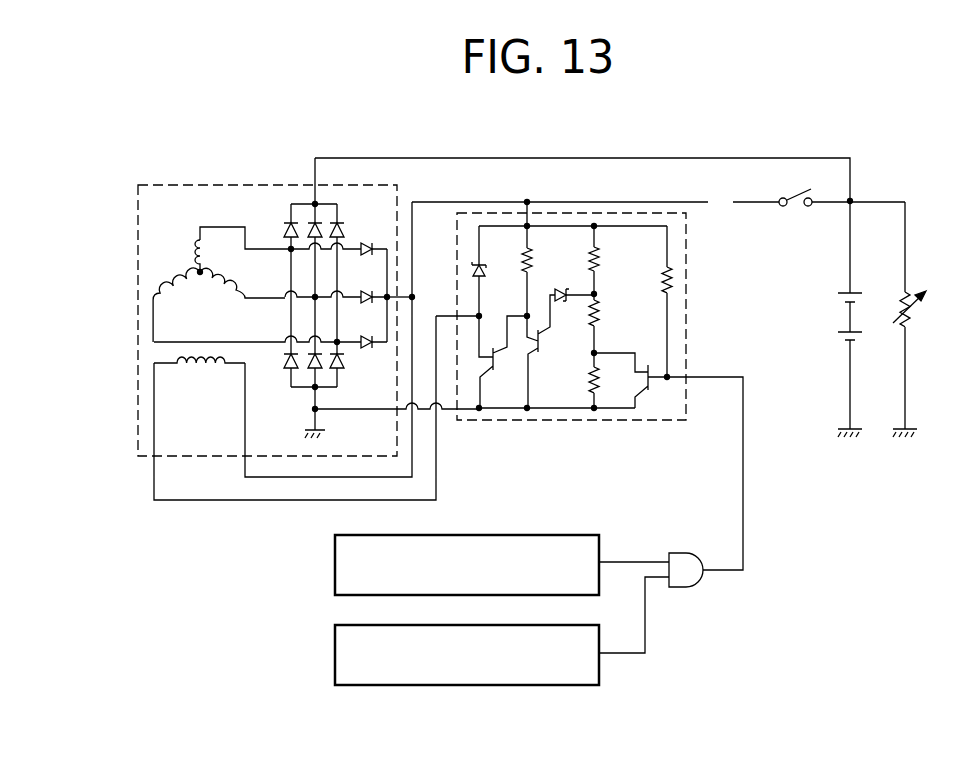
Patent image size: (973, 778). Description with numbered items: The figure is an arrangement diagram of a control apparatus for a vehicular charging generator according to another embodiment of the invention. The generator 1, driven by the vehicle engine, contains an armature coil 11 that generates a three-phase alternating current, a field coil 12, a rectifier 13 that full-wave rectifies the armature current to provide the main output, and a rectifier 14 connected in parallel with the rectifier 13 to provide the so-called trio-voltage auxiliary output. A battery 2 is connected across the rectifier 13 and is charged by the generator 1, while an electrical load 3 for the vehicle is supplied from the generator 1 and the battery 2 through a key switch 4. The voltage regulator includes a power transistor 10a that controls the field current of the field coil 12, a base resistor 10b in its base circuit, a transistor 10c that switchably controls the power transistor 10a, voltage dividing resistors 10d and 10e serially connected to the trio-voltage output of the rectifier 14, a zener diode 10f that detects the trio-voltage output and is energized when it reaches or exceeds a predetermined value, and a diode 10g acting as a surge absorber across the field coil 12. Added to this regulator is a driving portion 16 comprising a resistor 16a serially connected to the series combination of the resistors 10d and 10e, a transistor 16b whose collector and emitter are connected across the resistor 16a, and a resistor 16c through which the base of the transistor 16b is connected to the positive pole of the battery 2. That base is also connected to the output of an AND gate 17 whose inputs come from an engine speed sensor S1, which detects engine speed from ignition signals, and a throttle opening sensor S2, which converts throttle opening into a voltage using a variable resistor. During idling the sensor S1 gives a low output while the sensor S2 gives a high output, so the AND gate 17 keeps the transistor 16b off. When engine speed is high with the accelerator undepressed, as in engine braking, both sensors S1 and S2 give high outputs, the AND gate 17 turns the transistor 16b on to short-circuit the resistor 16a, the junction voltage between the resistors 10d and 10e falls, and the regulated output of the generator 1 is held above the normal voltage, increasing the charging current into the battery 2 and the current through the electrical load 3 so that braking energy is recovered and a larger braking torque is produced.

The generator 1 is at (200, 185).
The battery 2 is at (838, 330).
The electrical load 3 is at (920, 304).
The key switch 4 is at (795, 206).
The power transistor 10a is at (495, 366).
The base resistor 10b is at (530, 262).
The transistor 10c is at (540, 354).
The voltage dividing resistor 10d is at (598, 258).
The voltage dividing resistor 10e is at (597, 319).
The zener diode 10f is at (565, 305).
The diode 10g is at (484, 266).
The armature coil 11 is at (173, 290).
The field coil 12 is at (200, 371).
The rectifier 13 is at (289, 226).
The rectifier 14 is at (368, 348).
The driving portion 16 is at (523, 421).
The resistor 16a is at (598, 385).
The transistor 16b is at (650, 392).
The resistor 16c is at (674, 272).
The AND gate 17 is at (683, 553).
The engine speed sensor S1 is at (597, 535).
The throttle opening sensor S2 is at (588, 688).